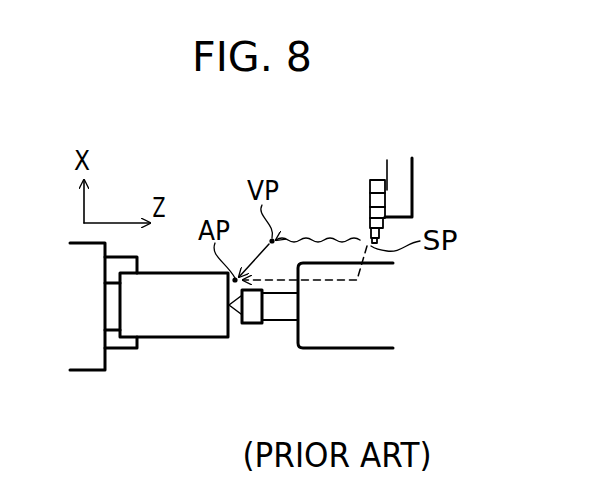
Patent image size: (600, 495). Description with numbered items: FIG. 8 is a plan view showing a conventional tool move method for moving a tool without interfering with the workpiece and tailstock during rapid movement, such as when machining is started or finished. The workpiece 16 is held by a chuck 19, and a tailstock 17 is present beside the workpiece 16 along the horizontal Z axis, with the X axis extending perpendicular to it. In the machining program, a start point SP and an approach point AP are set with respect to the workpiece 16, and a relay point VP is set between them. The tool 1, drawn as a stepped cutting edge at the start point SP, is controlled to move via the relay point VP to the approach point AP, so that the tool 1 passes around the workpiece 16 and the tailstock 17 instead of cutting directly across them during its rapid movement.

The tool 1 is at (368, 242).
The workpiece 16 is at (190, 338).
The tailstock 17 is at (312, 349).
The chuck 19 is at (118, 350).